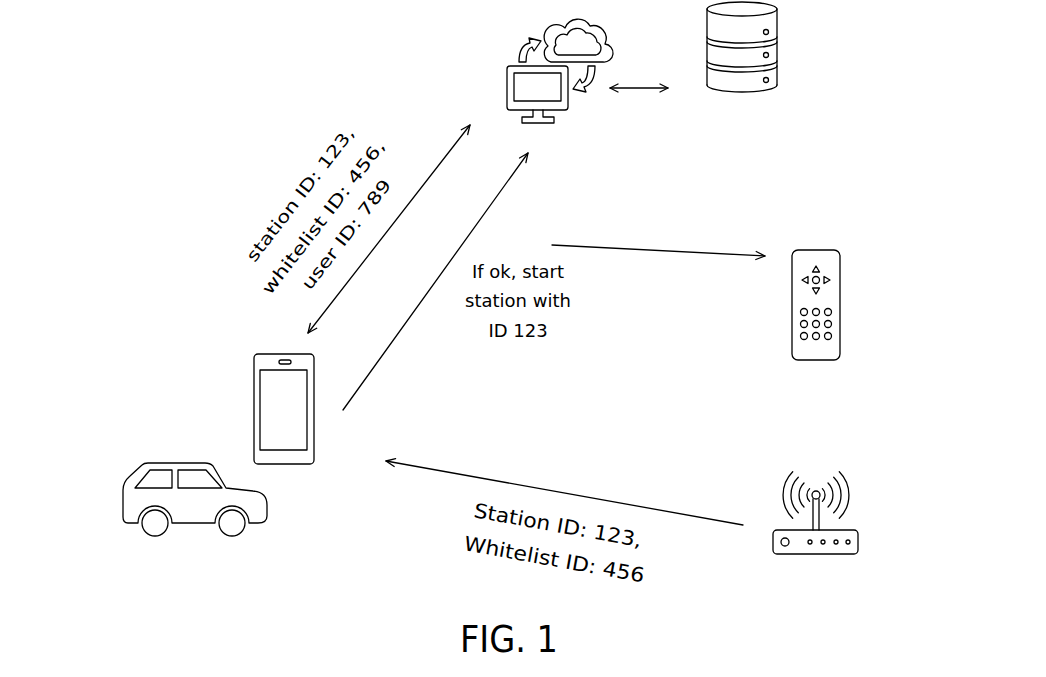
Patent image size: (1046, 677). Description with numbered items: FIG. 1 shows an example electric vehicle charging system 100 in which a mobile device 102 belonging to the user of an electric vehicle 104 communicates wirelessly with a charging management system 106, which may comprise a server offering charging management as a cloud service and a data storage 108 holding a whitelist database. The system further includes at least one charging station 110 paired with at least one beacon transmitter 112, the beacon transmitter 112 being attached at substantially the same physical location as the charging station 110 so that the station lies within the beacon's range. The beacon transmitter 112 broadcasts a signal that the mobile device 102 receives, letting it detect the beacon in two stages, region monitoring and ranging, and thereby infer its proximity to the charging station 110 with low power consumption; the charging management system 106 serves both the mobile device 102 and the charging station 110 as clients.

The electric vehicle charging system 100 is at (212, 143).
The mobile device 102 is at (251, 399).
The electric vehicle 104 is at (141, 472).
The charging management system 106 is at (517, 66).
The data storage 108 is at (777, 42).
The charging station 110 is at (838, 298).
The beacon transmitter 112 is at (857, 540).